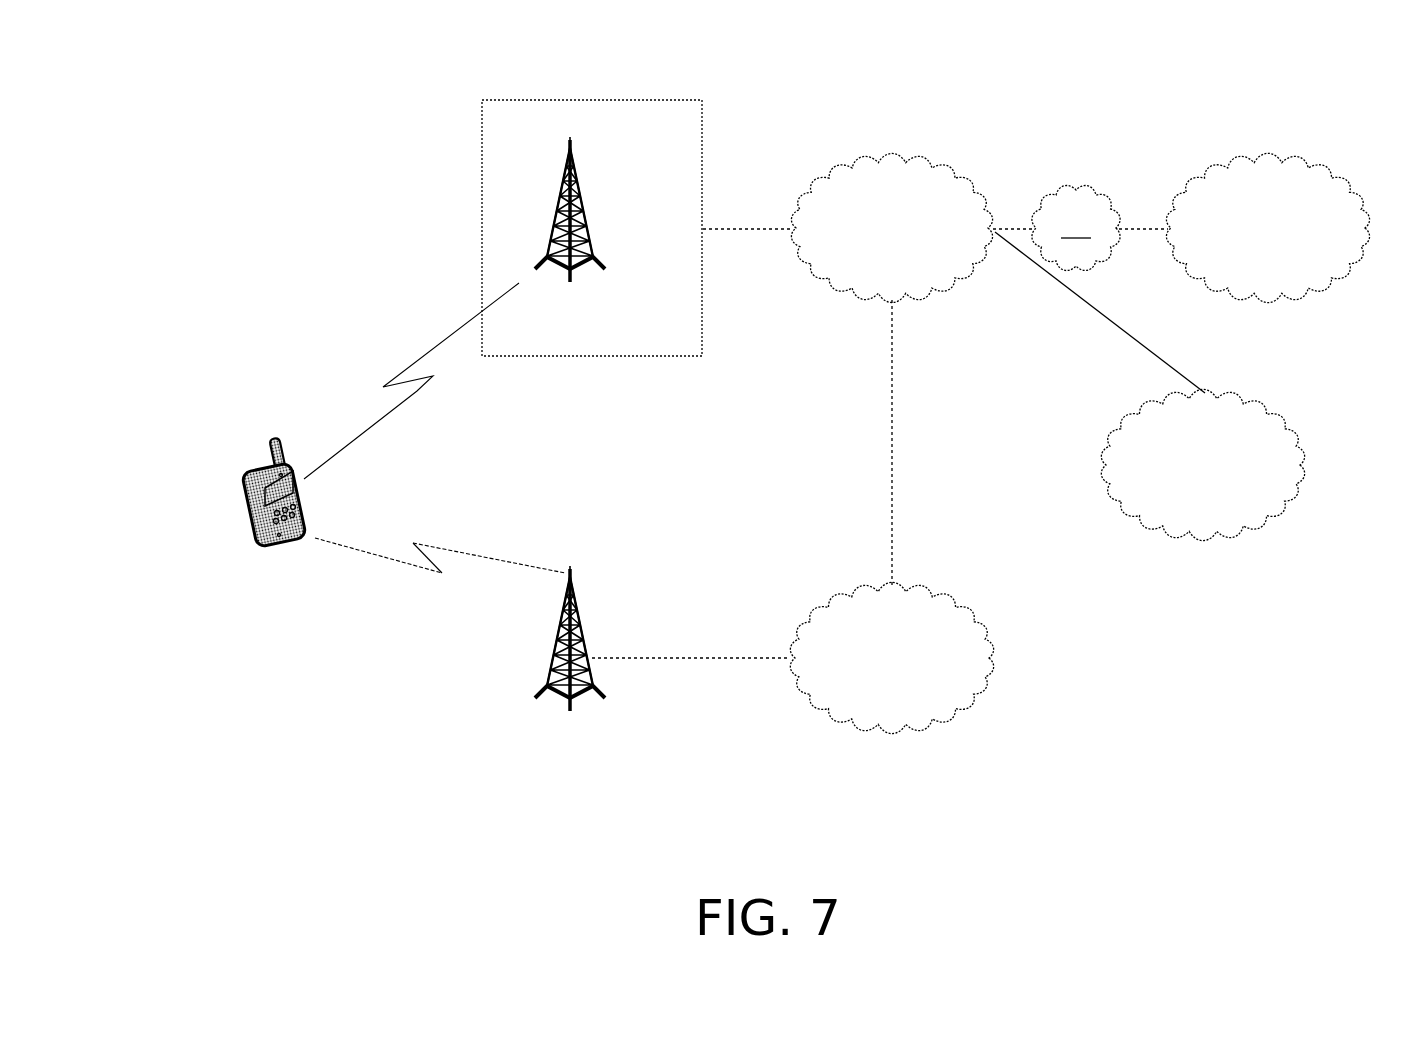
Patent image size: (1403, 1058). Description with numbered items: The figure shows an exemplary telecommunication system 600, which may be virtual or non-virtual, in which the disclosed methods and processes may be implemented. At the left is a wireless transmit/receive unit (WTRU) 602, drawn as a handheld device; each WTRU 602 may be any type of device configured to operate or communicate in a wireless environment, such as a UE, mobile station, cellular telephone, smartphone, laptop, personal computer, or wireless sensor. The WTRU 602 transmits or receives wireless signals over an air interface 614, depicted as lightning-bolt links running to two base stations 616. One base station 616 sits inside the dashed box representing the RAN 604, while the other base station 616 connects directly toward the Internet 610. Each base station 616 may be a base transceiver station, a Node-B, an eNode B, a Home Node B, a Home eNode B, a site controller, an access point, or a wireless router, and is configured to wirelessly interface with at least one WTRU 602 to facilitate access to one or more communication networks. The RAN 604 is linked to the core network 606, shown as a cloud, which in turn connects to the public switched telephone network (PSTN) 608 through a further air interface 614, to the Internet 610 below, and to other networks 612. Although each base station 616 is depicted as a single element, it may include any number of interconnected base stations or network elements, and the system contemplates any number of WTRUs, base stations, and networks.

The telecommunication system 600 is at (1186, 37).
The wireless transmit/receive unit 602 is at (248, 490).
The RAN 604 is at (645, 135).
The core network 606 is at (872, 206).
The public switched telephone network 608 is at (1248, 206).
The Internet 610 is at (872, 638).
The other networks 612 is at (1183, 443).
The air interface 614 is at (417, 391).
The base station 616 is at (574, 280).